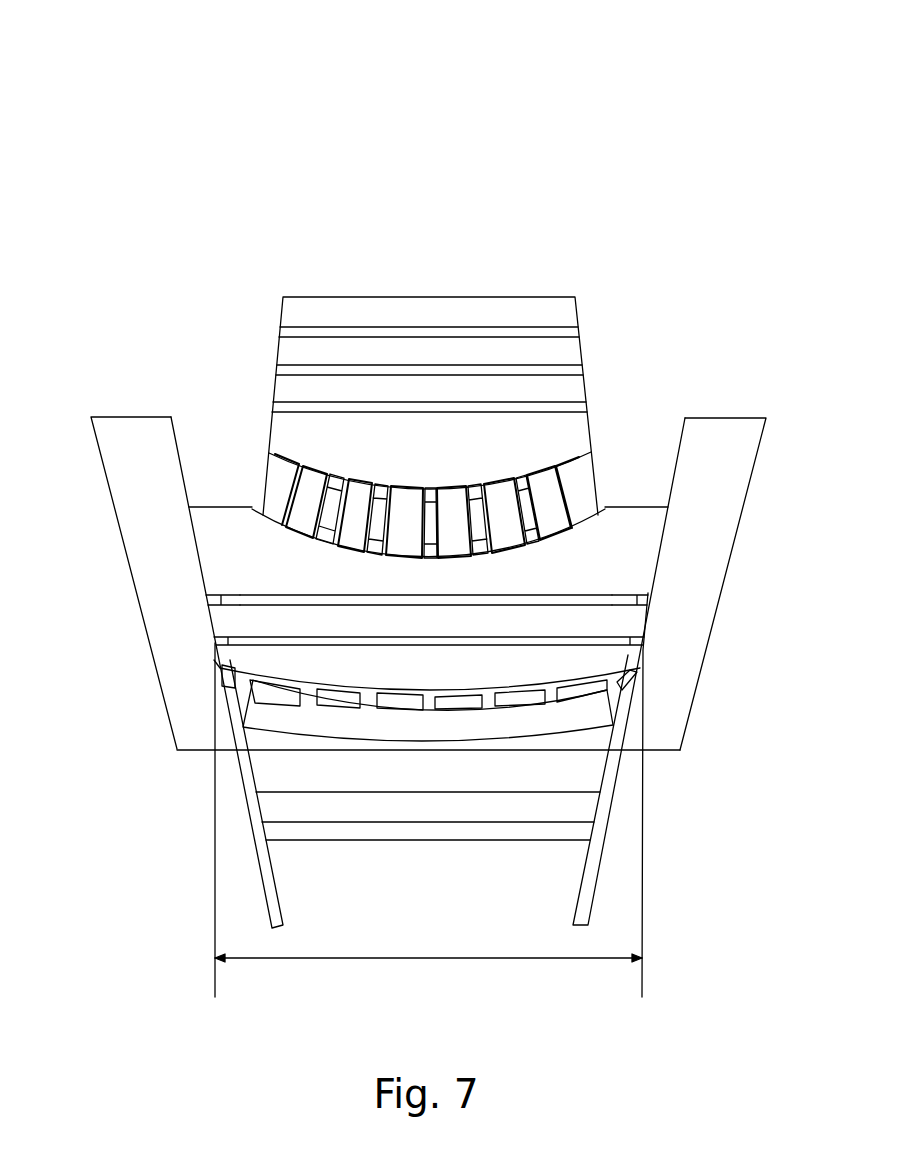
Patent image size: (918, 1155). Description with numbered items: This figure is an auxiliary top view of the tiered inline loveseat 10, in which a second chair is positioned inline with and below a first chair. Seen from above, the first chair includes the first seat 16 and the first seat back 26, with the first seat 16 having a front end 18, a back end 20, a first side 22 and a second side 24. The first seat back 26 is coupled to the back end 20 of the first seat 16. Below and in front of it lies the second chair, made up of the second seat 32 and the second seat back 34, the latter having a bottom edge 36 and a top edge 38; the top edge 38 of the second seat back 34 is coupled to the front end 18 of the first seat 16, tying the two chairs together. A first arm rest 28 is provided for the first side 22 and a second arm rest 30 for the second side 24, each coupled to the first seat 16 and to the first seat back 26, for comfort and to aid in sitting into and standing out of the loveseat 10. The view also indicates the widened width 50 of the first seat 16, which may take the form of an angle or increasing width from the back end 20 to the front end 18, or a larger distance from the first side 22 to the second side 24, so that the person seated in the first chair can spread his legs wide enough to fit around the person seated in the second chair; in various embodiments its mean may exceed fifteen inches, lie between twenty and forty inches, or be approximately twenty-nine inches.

The tiered inline loveseat 10 is at (185, 92).
The first seat 16 is at (254, 620).
The front end 18 is at (458, 548).
The back end 20 is at (563, 672).
The first side 22 is at (204, 591).
The second side 24 is at (650, 581).
The first seat back 26 is at (335, 708).
The first arm rest 28 is at (122, 465).
The second arm rest 30 is at (713, 522).
The second seat 32 is at (310, 362).
The second seat back 34 is at (353, 514).
The bottom edge 36 is at (455, 482).
The top edge 38 is at (438, 551).
The widened width 50 is at (405, 960).